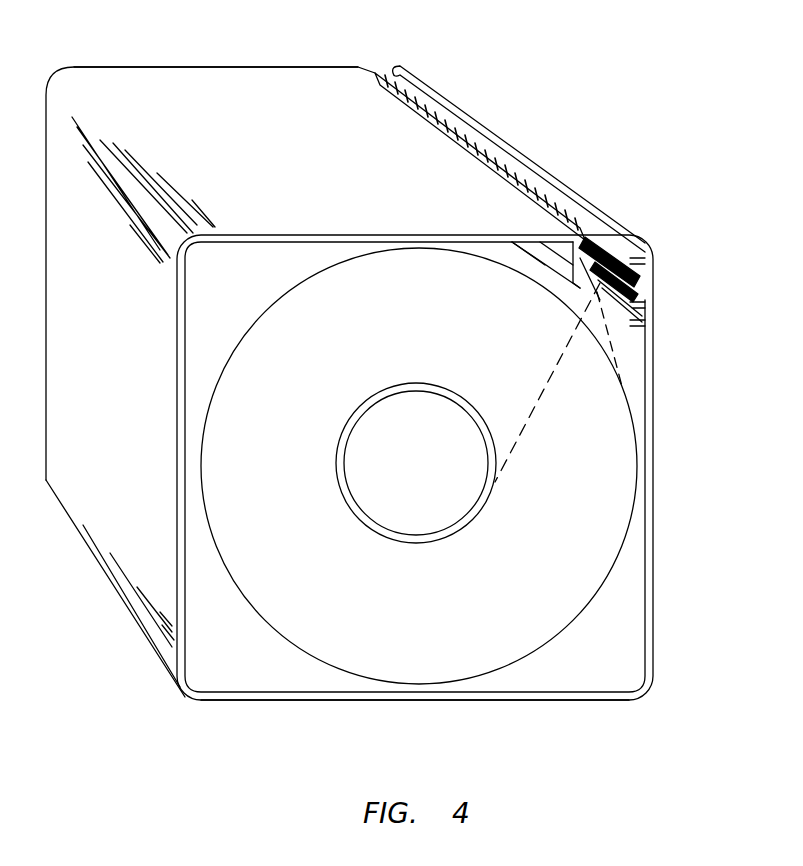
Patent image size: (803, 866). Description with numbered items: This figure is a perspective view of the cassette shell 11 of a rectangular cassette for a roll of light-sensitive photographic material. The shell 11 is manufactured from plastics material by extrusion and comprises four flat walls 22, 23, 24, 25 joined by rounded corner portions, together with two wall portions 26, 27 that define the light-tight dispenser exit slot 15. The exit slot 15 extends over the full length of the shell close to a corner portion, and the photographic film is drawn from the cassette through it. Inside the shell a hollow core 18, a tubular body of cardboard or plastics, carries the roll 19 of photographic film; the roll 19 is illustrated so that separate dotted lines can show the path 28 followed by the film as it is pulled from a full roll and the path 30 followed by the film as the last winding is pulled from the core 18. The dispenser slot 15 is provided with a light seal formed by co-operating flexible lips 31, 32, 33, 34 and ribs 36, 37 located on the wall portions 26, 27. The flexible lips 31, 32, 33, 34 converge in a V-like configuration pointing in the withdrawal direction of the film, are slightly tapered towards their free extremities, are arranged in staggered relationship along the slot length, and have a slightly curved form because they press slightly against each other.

The shell 11 is at (156, 62).
The flat wall 22 is at (300, 156).
The flat wall 23 is at (650, 513).
The flat wall 24 is at (258, 702).
The flat wall 25 is at (138, 552).
The hollow core 18 is at (421, 540).
The roll 19 is at (528, 625).
The light-tight exit slot 15 is at (597, 210).
The wall portion 26 is at (550, 253).
The wall portion 27 is at (647, 280).
The path 28 is at (623, 381).
The path 30 is at (543, 392).
The flexible lip 31 is at (555, 213).
The flexible lip 32 is at (650, 247).
The flexible lip 33 is at (640, 353).
The flexible lip 34 is at (635, 290).
The rib 36 is at (650, 260).
The rib 37 is at (520, 243).